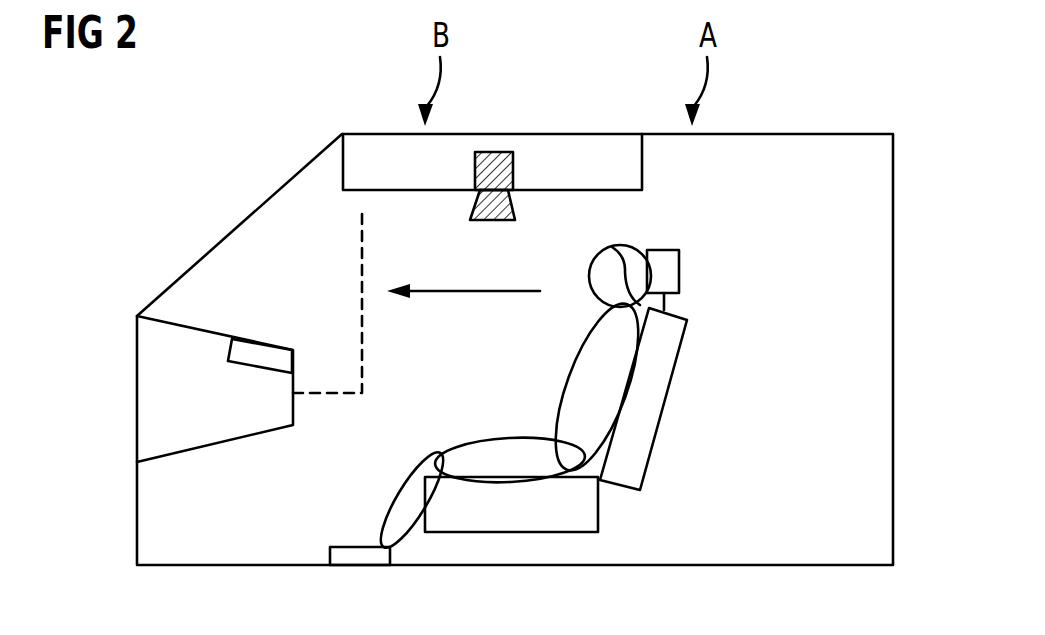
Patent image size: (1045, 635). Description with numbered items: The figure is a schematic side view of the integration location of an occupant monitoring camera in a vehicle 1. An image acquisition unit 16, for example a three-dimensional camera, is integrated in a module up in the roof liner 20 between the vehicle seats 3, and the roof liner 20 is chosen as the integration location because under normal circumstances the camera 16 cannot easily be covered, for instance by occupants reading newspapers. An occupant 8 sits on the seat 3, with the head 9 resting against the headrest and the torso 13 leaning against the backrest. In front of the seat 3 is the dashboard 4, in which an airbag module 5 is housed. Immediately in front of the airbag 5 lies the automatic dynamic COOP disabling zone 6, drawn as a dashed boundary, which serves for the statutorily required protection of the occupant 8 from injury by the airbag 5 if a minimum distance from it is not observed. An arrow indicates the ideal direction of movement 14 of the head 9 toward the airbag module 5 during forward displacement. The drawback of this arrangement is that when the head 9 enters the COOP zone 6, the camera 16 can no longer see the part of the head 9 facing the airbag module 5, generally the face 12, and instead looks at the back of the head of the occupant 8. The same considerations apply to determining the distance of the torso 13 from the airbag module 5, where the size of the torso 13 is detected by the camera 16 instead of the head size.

The motor vehicle 1 is at (228, 195).
The vehicle seat 3 is at (652, 390).
The dashboard 4 is at (177, 435).
The airbag module 5 is at (245, 350).
The COOP disabling zone 6 is at (360, 241).
The occupant 8 is at (528, 382).
The head 9 is at (601, 258).
The face 12 is at (599, 270).
The torso 13 is at (590, 364).
The direction of movement 14 is at (443, 291).
The image acquisition unit 16 is at (475, 205).
The roof liner 20 is at (629, 166).